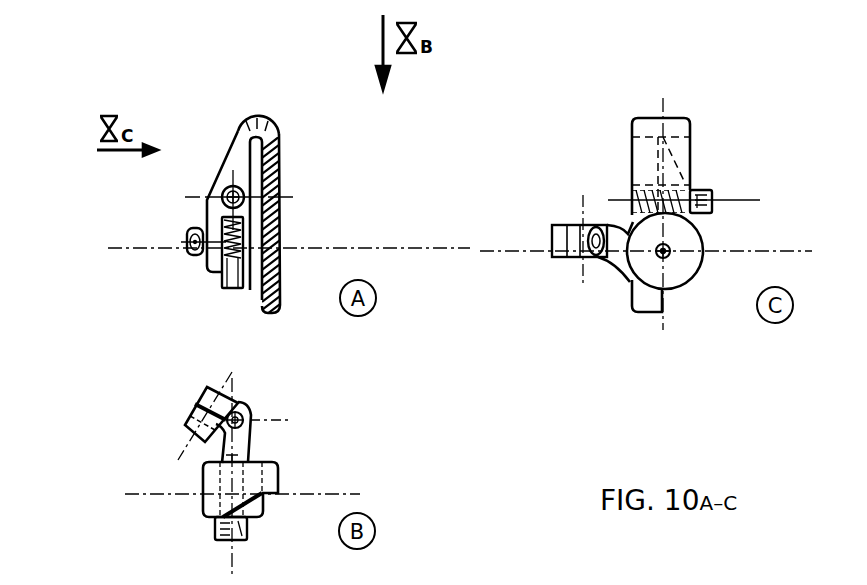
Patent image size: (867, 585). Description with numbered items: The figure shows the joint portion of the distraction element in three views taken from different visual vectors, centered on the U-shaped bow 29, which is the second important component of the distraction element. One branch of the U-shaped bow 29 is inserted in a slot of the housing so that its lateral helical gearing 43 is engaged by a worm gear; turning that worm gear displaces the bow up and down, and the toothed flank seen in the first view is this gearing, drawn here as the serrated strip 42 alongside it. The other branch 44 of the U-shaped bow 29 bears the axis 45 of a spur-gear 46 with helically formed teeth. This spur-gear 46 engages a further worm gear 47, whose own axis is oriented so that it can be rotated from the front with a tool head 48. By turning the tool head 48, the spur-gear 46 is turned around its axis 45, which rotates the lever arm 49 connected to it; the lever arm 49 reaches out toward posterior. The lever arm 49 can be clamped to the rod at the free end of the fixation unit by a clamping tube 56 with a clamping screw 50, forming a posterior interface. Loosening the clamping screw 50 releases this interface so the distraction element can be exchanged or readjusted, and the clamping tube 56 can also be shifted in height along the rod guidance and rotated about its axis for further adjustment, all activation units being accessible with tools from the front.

In FIG. 10A, the U-shaped bow 29 is at (250, 110).
In FIG. 10C, the U-shaped bow 29 is at (694, 113).
In FIG. 10A, the serrated strip 42 is at (281, 227).
In FIG. 10A, the lateral helical gearing 43 is at (281, 180).
In FIG. 10C, the lateral helical gearing 43 is at (633, 292).
In FIG. 10A, the other branch of the U-shaped bow 44 is at (225, 148).
In FIG. 10C, the other branch of the U-shaped bow 44 is at (680, 140).
In FIG. 10C, the axis 45 is at (668, 254).
In FIG. 10A, the spur-gear with helically formed teeth 46 is at (228, 275).
In FIG. 10C, the spur-gear with helically formed teeth 46 is at (703, 233).
In FIG. 10C, the worm gear 47 is at (662, 197).
In FIG. 10A, the tool head 48 is at (221, 196).
In FIG. 10C, the tool head 48 is at (711, 192).
In FIG. 10B, the tool head 48 is at (216, 530).
In FIG. 10C, the lever arm 49 is at (613, 257).
In FIG. 10A, the clamping screw 50 is at (187, 243).
In FIG. 10C, the clamping screw 50 is at (553, 225).
In FIG. 10B, the clamping screw 50 is at (187, 424).
In FIG. 10B, the clamping tube 56 is at (227, 403).